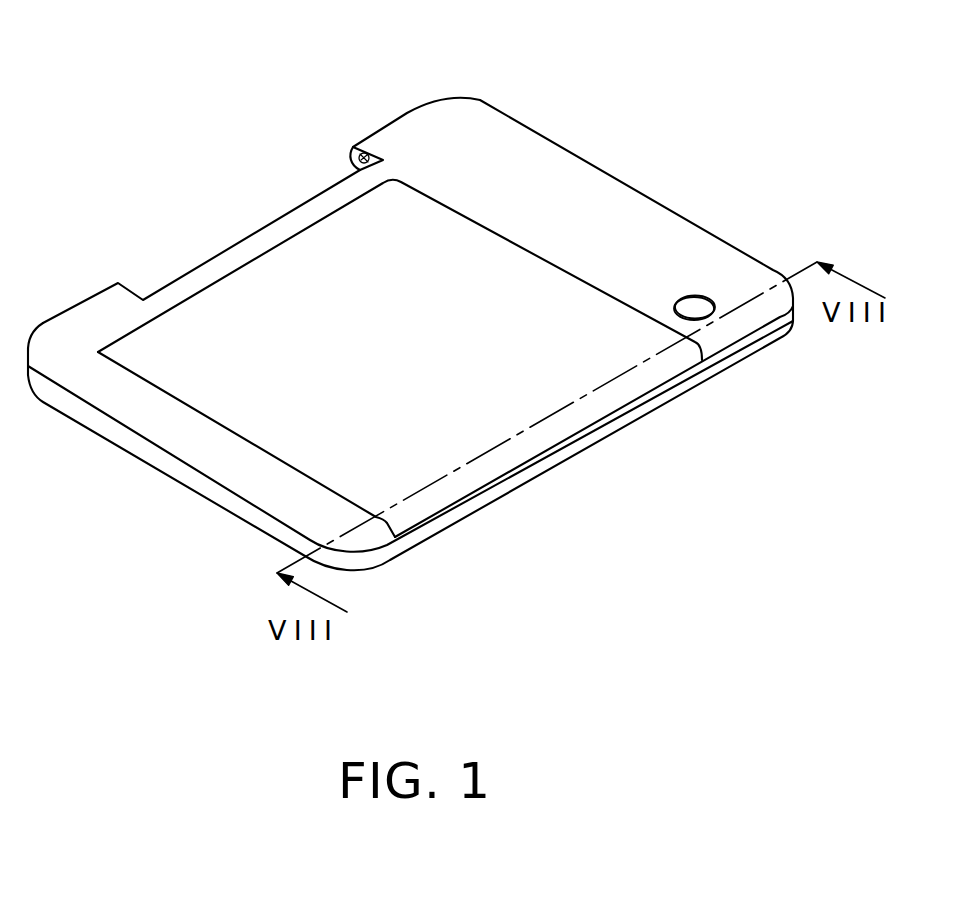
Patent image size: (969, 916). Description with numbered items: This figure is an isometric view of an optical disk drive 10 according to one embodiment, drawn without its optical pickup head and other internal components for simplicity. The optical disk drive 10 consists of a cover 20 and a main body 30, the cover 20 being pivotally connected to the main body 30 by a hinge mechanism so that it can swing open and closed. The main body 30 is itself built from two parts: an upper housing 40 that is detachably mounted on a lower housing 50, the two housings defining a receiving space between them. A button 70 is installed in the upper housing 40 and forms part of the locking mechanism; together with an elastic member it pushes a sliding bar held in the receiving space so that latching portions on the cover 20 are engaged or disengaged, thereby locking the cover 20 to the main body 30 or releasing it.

The optical disk drive 10 is at (434, 287).
The cover 20 is at (287, 265).
The main body 30 is at (434, 334).
The upper housing 40 is at (713, 333).
The lower housing 50 is at (773, 333).
The button 70 is at (697, 305).